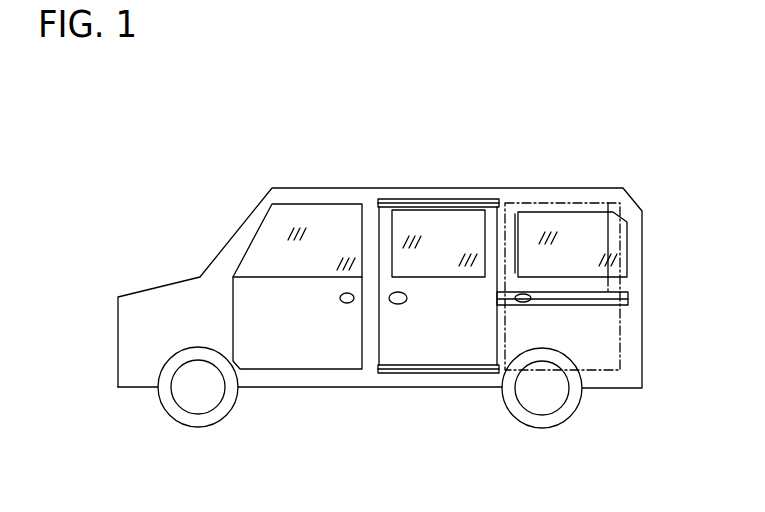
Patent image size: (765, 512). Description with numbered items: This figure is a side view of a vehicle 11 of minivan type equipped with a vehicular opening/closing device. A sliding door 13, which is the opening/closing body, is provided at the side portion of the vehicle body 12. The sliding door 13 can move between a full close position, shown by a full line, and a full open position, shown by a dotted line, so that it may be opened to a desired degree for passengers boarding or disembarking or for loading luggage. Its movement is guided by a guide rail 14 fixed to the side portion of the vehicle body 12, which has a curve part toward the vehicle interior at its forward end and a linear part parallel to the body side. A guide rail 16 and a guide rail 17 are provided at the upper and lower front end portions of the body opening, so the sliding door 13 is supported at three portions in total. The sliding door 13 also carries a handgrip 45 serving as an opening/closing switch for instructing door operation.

The vehicle 11 is at (583, 146).
The vehicle body 12 is at (515, 187).
The sliding door 13 is at (438, 353).
The guide rail 14 is at (595, 308).
The guide rail 16 is at (440, 196).
The guide rail 17 is at (468, 378).
The handgrip 45 is at (397, 305).